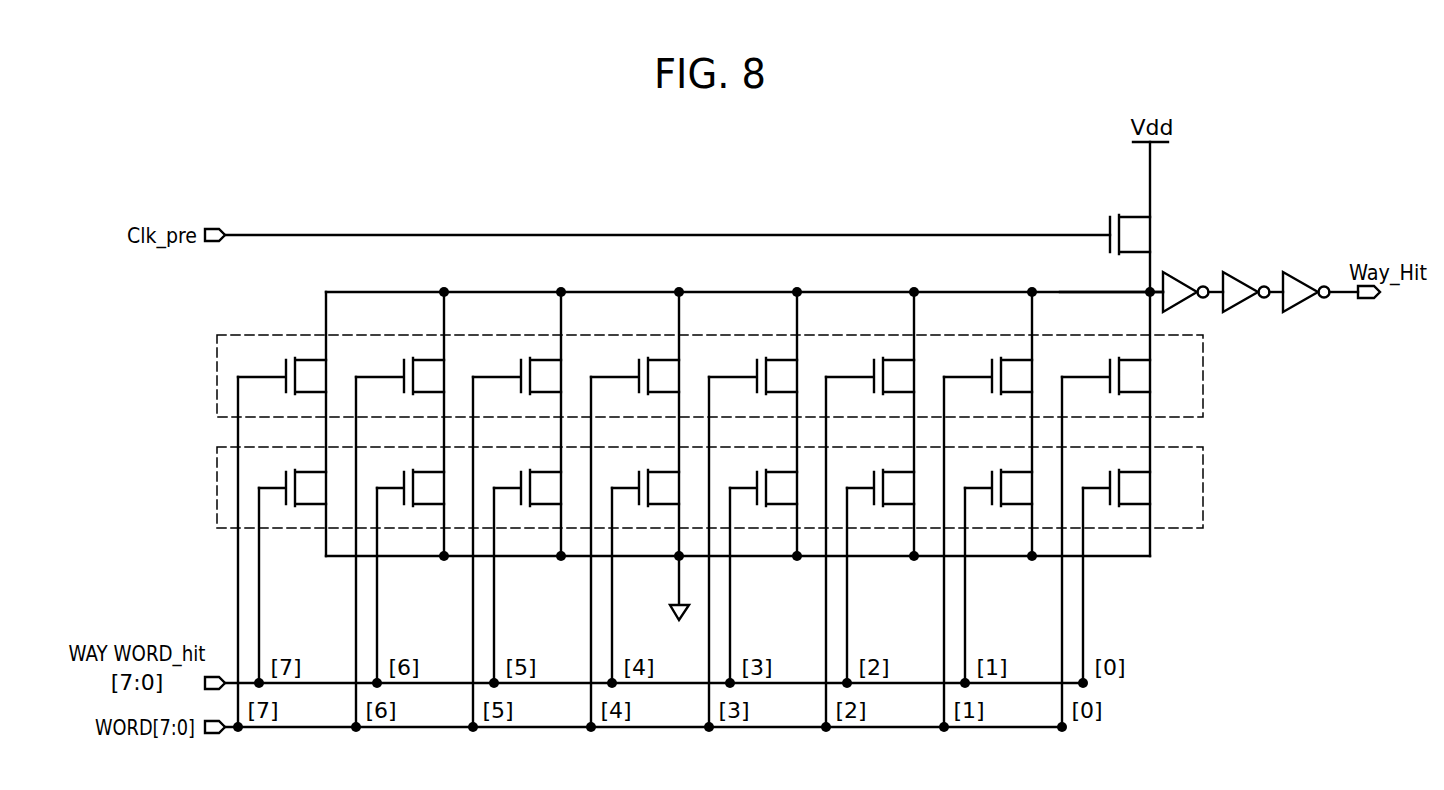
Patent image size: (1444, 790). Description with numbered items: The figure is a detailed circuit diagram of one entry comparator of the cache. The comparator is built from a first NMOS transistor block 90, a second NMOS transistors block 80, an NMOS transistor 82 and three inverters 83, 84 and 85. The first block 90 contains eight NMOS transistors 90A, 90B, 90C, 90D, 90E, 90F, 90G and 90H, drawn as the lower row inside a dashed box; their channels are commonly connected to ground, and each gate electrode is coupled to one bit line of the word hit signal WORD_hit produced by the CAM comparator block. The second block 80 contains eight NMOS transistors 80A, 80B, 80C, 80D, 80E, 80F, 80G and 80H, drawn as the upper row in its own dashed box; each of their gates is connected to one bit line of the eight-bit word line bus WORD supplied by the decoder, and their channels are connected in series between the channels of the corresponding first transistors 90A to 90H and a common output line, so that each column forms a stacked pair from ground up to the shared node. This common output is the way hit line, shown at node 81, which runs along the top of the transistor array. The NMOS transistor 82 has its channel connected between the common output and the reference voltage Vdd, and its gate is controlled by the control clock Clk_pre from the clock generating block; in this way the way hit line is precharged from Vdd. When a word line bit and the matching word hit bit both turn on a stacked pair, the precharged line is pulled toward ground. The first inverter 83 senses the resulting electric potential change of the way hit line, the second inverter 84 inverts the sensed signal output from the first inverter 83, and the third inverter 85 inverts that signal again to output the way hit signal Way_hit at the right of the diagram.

The second NMOS transistors block 80 is at (217, 374).
The first NMOS transistor block 90 is at (217, 487).
The NMOS transistor 80A is at (310, 358).
The NMOS transistor 80B is at (428, 358).
The NMOS transistor 80C is at (545, 358).
The NMOS transistor 80D is at (663, 358).
The NMOS transistor 80E is at (781, 358).
The NMOS transistor 80F is at (898, 358).
The NMOS transistor 80G is at (1016, 358).
The NMOS transistor 80H is at (1135, 358).
The NMOS transistor 90A is at (310, 470).
The NMOS transistor 90B is at (428, 470).
The NMOS transistor 90C is at (545, 470).
The NMOS transistor 90D is at (663, 470).
The NMOS transistor 90E is at (781, 470).
The NMOS transistor 90F is at (898, 470).
The NMOS transistor 90G is at (1016, 470).
The NMOS transistor 90H is at (1135, 470).
The precharge node 81 is at (1097, 290).
The NMOS transistor 82 is at (1133, 217).
The first inverter 83 is at (1173, 272).
The second inverter 84 is at (1235, 272).
The third inverter 85 is at (1295, 272).